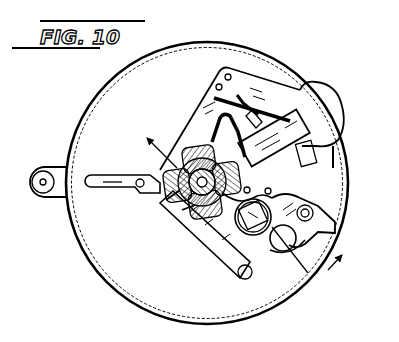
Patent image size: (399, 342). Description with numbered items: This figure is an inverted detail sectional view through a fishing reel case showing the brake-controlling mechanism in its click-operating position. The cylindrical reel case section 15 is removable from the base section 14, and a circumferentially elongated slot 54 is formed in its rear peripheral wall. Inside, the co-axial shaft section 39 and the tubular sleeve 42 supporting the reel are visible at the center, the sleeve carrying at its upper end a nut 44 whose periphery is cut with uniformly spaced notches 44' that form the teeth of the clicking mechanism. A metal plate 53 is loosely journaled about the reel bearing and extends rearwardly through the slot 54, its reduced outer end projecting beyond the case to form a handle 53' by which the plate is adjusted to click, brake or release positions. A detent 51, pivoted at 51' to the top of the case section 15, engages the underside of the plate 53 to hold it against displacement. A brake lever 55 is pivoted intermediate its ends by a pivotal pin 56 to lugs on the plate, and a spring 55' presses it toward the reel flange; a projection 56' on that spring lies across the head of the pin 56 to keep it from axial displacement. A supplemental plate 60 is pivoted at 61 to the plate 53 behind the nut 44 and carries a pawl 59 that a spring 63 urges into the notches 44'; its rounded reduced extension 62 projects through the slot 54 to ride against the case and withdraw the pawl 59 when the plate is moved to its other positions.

The base section 14 is at (253, 194).
The cylindrical reel case section 15 is at (83, 118).
The co-axial shaft section 39 is at (205, 150).
The tubular sleeve 42 is at (180, 206).
The nut 44 is at (156, 206).
The peripheral notches 44' is at (176, 229).
The detent 51 is at (122, 199).
The detent pivot 51' is at (132, 172).
The metal plate 53 is at (230, 119).
The handle 53' is at (338, 125).
The circumferentially elongated slot 54 is at (345, 190).
The brake lever 55 is at (300, 126).
The spring 55' is at (335, 154).
The pivotal pin 56 is at (252, 186).
The projection 56' is at (285, 90).
The pawl 59 is at (205, 250).
The supplemental plate 60 is at (291, 251).
The pivot 61 is at (284, 240).
The reduced extension 62 is at (335, 229).
The spring 63 is at (258, 265).